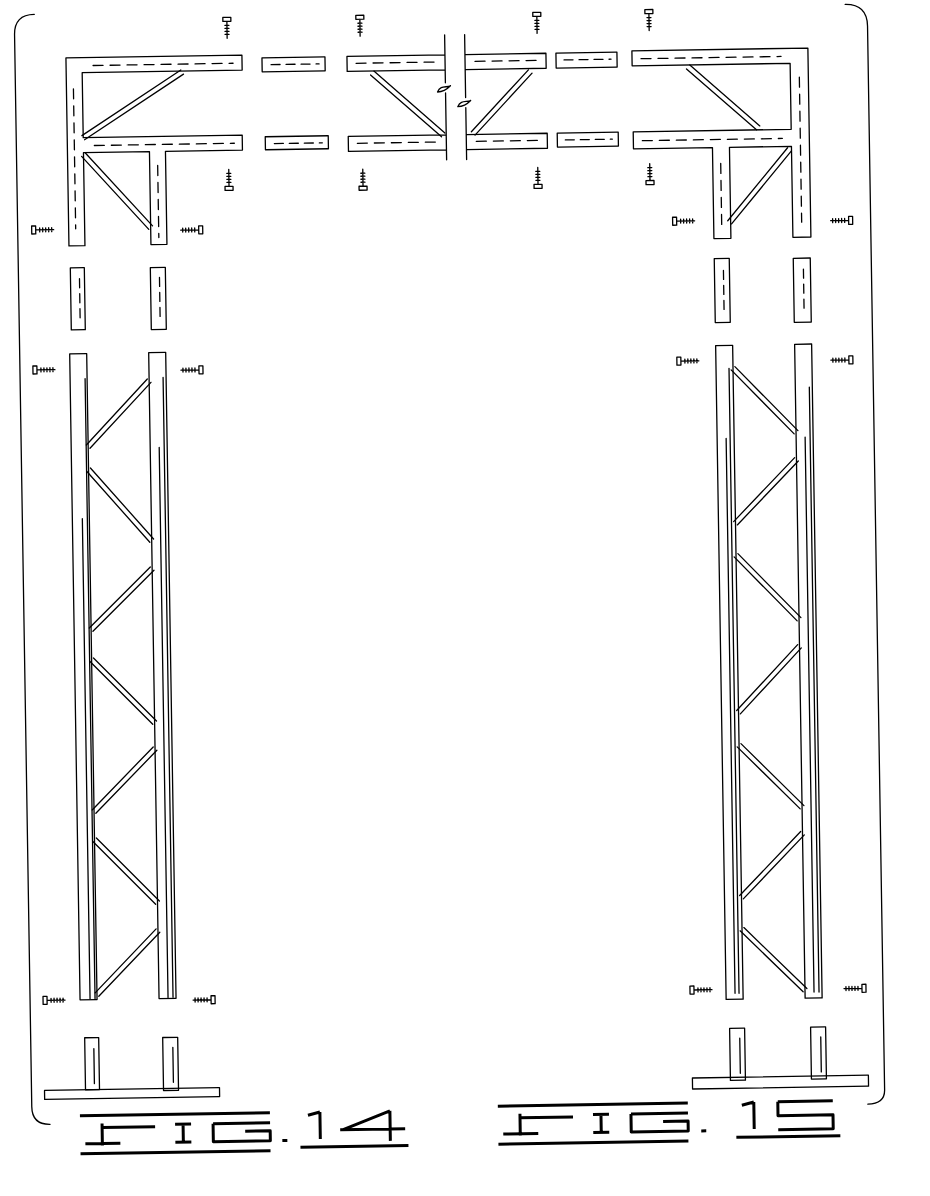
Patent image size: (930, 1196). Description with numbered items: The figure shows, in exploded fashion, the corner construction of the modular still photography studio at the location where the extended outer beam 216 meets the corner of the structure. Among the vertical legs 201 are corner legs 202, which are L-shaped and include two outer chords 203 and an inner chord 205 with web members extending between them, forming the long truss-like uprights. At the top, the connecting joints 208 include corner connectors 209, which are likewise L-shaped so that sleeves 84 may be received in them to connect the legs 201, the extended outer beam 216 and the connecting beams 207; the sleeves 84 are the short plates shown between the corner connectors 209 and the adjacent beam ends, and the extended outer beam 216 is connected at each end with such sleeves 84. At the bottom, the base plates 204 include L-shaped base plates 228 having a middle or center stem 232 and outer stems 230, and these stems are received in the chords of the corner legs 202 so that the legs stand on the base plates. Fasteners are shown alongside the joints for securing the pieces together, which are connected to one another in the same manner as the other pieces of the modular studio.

In FIG. 14, the sleeves 84 is at (281, 61).
In FIG. 15, the sleeves 84 is at (601, 60).
In FIG. 14, the vertical legs 201 is at (208, 675).
In FIG. 15, the vertical legs 201 is at (699, 673).
In FIG. 14, the corner legs 202 is at (208, 675).
In FIG. 15, the corner legs 202 is at (699, 673).
In FIG. 14, the outer chords 203 is at (161, 684).
In FIG. 15, the outer chords 203 is at (712, 657).
In FIG. 14, the base plates 204 is at (190, 1072).
In FIG. 15, the base plates 204 is at (738, 1064).
In FIG. 14, the inner chord 205 is at (88, 762).
In FIG. 15, the inner chord 205 is at (791, 568).
In FIG. 14, the connecting beams 207 is at (513, 158).
In FIG. 14, the connecting joints 208 is at (147, 129).
In FIG. 15, the connecting joints 208 is at (733, 124).
In FIG. 14, the corner connectors 209 is at (66, 86).
In FIG. 15, the corner connectors 209 is at (820, 36).
In FIG. 14, the extended outer beam 216 is at (420, 157).
In FIG. 14, the L-shaped base plates 228 is at (172, 1094).
In FIG. 15, the L-shaped base plates 228 is at (700, 1094).
In FIG. 14, the outer stems 230 is at (160, 1049).
In FIG. 15, the outer stems 230 is at (716, 1049).
In FIG. 14, the center stem 232 is at (80, 1052).
In FIG. 15, the center stem 232 is at (800, 1046).